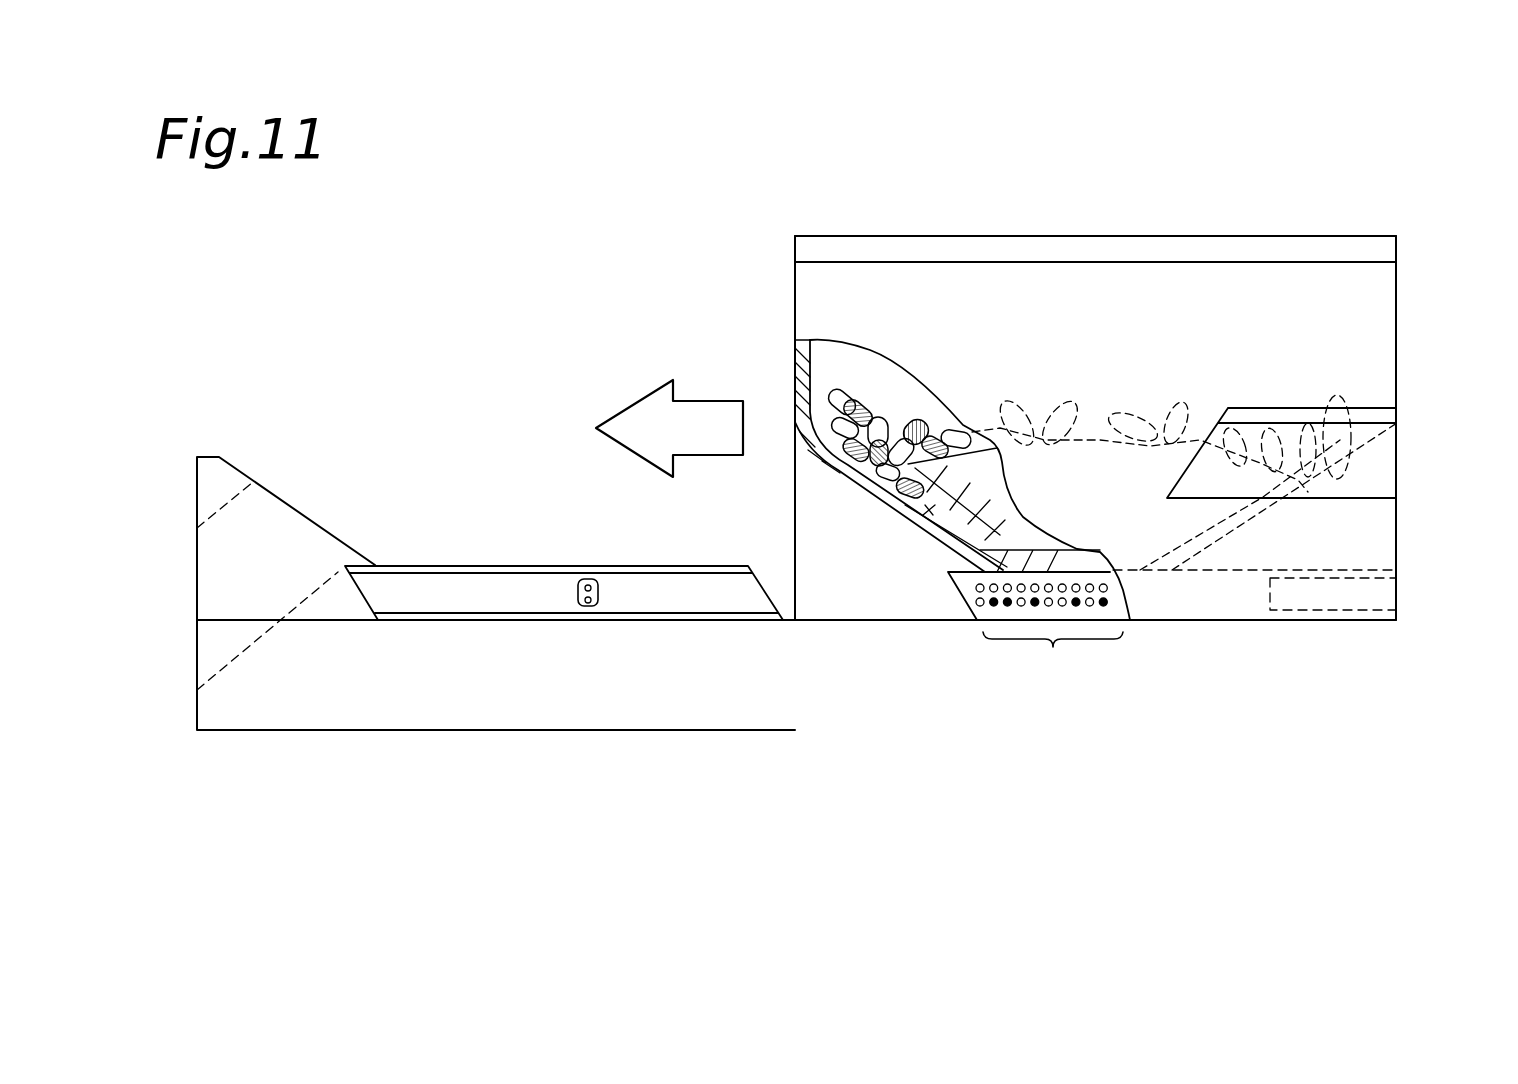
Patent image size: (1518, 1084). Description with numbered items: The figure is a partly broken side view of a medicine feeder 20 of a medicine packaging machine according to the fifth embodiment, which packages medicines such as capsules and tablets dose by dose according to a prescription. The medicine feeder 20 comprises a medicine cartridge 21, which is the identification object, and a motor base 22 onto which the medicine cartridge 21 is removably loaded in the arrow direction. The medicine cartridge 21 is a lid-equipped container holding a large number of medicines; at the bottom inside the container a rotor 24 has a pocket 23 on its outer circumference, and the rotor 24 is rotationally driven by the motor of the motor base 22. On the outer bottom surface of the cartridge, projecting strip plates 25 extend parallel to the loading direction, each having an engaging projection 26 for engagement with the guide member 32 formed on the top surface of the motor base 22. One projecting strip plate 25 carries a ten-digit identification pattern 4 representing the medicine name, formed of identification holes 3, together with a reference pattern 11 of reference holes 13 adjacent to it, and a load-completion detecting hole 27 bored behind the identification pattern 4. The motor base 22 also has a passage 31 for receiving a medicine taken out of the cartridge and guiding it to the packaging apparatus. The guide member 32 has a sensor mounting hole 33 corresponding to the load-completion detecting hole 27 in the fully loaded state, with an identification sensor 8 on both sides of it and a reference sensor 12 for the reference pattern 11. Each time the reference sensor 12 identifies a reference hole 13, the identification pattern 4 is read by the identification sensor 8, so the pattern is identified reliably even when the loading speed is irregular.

The identification hole 3 is at (978, 603).
The identification pattern 4 is at (1053, 660).
The identification sensor 8 is at (597, 598).
The reference pattern 11 is at (1040, 548).
The reference sensor 12 is at (592, 583).
The reference hole 13 is at (978, 588).
The medicine feeder 20 is at (690, 229).
The medicine cartridge 21 is at (1397, 316).
The motor base 22 is at (455, 732).
The pocket 23 is at (918, 518).
The rotor 24 is at (1100, 433).
The projecting strip plate 25 is at (948, 573).
The engaging projection 26 is at (1352, 612).
The load-completion detecting hole 27 is at (1190, 592).
The passage 31 is at (318, 588).
The guide member 32 is at (479, 566).
The sensor mounting hole 33 is at (578, 596).